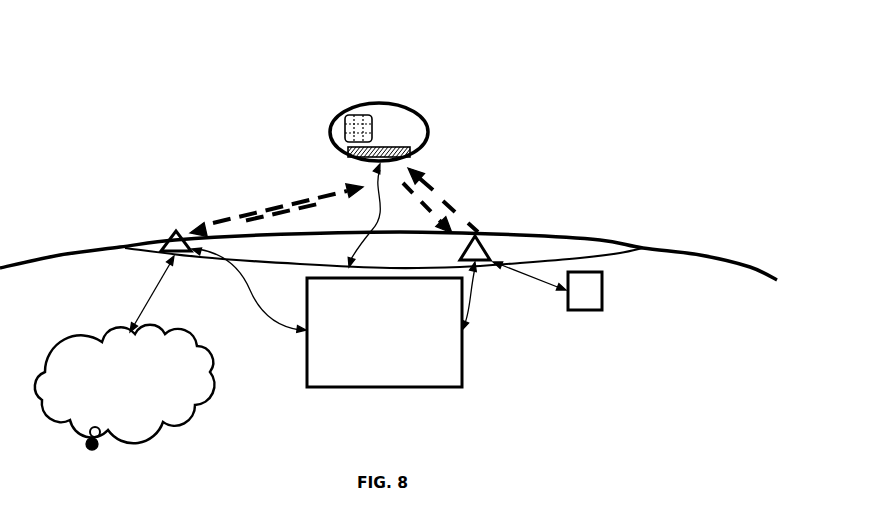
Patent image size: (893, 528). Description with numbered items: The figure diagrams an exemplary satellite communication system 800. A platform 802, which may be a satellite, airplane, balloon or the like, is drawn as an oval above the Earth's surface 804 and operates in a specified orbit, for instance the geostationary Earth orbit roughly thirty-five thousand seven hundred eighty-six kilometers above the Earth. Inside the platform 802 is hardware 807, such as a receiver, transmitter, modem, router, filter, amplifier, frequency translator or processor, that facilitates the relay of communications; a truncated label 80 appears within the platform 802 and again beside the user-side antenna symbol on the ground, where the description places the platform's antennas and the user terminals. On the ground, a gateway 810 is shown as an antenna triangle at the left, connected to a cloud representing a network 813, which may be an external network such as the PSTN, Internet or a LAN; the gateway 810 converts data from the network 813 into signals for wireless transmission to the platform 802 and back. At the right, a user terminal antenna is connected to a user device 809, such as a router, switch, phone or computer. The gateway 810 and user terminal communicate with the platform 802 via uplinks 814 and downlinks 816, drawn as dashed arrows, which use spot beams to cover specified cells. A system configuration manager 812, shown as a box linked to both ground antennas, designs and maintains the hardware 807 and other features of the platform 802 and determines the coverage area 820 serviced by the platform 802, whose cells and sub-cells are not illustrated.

The satellite communication system 800 is at (146, 109).
The platform 802 is at (395, 166).
The Earth's surface 804 is at (388, 254).
The hardware 807 is at (336, 126).
The satellite antenna / terminal 80 is at (391, 141).
The user device 809 is at (602, 322).
The gateway 810 is at (115, 250).
The system configuration manager 812 is at (413, 324).
The network 813 is at (132, 353).
The uplink 814 is at (399, 231).
The downlink 816 is at (334, 202).
The coverage area 820 is at (224, 273).